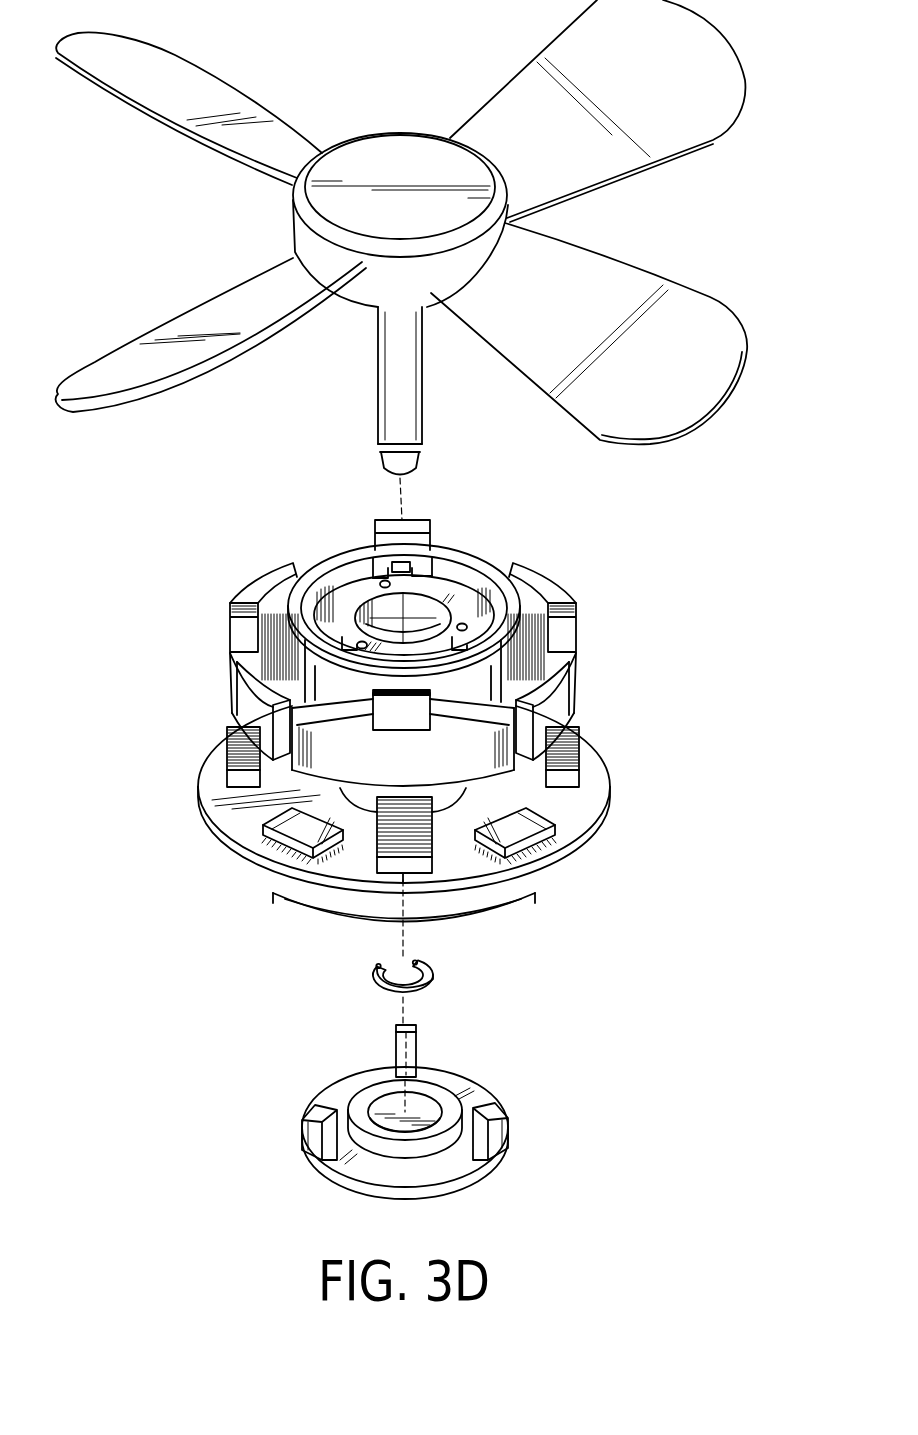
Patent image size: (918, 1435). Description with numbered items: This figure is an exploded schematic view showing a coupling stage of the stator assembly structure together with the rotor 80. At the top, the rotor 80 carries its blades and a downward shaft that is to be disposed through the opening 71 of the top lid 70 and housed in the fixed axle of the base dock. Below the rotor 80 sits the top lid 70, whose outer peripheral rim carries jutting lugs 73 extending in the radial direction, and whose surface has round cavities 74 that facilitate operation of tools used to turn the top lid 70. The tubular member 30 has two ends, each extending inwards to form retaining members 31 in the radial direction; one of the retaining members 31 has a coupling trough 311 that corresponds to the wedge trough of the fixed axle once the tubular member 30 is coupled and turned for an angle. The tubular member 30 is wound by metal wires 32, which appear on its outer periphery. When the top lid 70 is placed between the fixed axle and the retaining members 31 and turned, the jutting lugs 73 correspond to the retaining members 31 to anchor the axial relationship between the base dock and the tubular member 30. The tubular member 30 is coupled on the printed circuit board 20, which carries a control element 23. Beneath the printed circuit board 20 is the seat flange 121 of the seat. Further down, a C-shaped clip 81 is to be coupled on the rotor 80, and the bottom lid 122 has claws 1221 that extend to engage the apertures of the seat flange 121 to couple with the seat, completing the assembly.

The rotor 80 is at (392, 153).
The retaining members 31 is at (373, 552).
The coupling trough 311 is at (418, 574).
The jutting lugs 73 is at (432, 573).
The round cavities 74 is at (382, 578).
The opening 71 is at (365, 603).
The top lid 70 is at (345, 612).
The tubular member 30 is at (537, 590).
The metal wires 32 is at (520, 653).
The printed circuit board 20 is at (568, 805).
The control element 23 is at (273, 834).
The seat flange 121 is at (342, 903).
The C-shaped clip 81 is at (428, 974).
The bottom lid 122 is at (345, 1092).
The claws 1221 is at (503, 1114).